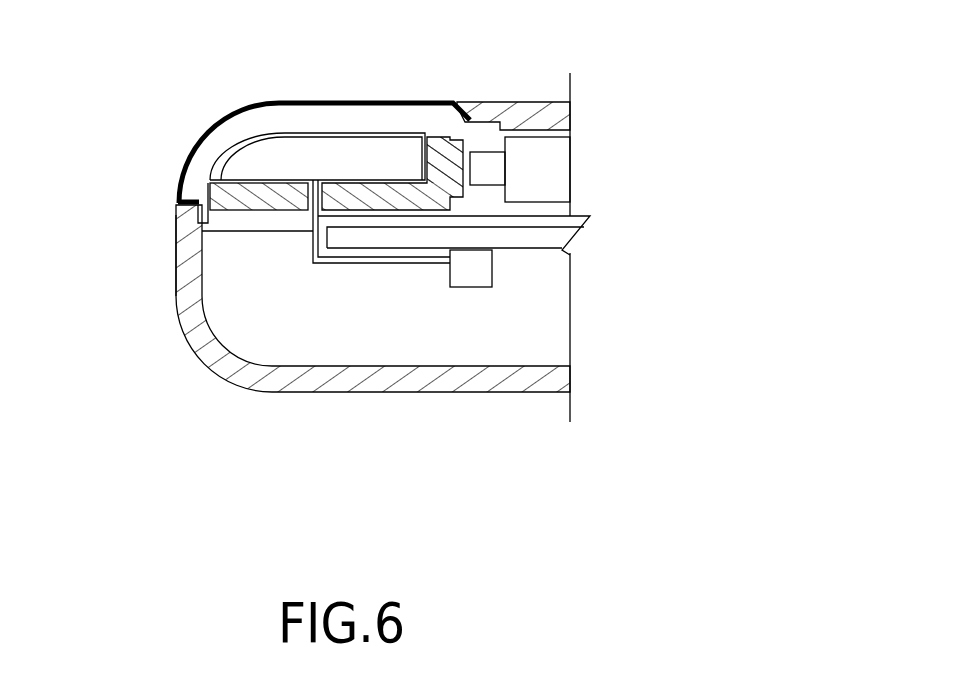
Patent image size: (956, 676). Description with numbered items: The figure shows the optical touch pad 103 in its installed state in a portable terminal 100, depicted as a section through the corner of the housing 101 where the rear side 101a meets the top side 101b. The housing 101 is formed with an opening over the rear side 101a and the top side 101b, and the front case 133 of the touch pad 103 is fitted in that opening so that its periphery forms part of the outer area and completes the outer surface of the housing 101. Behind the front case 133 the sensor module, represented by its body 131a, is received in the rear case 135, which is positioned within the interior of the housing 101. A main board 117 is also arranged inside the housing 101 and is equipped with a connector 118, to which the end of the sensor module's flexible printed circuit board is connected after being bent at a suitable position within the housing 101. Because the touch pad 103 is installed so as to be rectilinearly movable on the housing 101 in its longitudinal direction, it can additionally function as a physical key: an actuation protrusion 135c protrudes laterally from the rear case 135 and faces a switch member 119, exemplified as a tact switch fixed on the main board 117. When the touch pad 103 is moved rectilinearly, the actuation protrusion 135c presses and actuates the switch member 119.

The portable terminal 100 is at (66, 168).
The housing 101 is at (190, 362).
The rear side 101a is at (547, 100).
The top side 101b is at (177, 310).
The optical touch pad 103 is at (187, 142).
The main board 117 is at (533, 240).
The connector 118 is at (477, 273).
The switch member 119 is at (572, 167).
The body 131a is at (263, 155).
The front case 133 is at (348, 120).
The rear case 135 is at (272, 198).
The actuation protrusion 135c is at (458, 162).